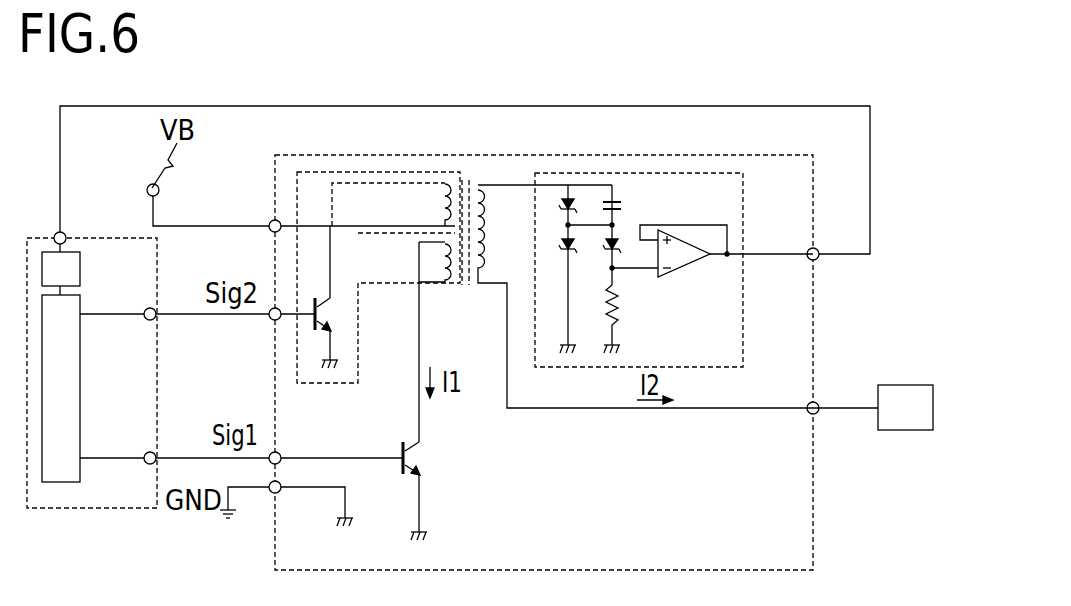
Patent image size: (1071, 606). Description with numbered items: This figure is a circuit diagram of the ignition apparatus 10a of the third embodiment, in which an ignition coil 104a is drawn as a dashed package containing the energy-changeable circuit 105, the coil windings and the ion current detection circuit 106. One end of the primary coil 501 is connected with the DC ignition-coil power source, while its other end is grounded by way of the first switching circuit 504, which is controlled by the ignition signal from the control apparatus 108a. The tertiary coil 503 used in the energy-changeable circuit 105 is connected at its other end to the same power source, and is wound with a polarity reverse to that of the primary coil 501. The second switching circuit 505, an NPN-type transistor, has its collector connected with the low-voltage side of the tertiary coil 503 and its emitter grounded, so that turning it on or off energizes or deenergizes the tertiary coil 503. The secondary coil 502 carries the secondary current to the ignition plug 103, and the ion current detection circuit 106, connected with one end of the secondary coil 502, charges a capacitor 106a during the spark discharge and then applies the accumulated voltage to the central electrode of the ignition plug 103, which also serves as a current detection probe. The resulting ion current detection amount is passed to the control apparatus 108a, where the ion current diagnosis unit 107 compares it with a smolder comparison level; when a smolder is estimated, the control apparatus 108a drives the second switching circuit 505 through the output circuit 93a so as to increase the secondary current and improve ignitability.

The ignition apparatus 10a is at (465, 156).
The power supply circuit board 104a is at (588, 371).
The energy-changeable circuit 105 is at (334, 248).
The ion current detection circuit 106 is at (674, 241).
The capacitor 106a is at (712, 233).
The ion current diagnosis unit 107 is at (87, 234).
The load unit 93a is at (91, 388).
The control apparatus 108a is at (92, 412).
The primary coil 501 is at (406, 337).
The secondary coil 502 is at (659, 294).
The tertiary coil 503 is at (391, 205).
The first switching circuit 504 is at (456, 482).
The second switching circuit 505 is at (362, 301).
The ignition plug 103 is at (901, 445).